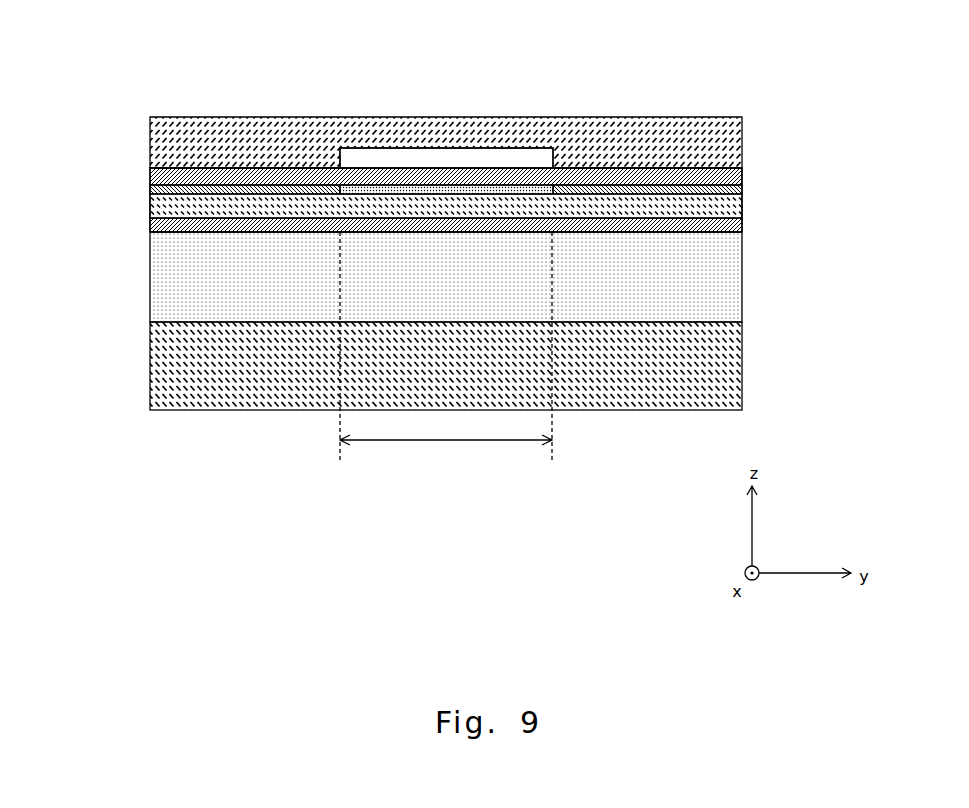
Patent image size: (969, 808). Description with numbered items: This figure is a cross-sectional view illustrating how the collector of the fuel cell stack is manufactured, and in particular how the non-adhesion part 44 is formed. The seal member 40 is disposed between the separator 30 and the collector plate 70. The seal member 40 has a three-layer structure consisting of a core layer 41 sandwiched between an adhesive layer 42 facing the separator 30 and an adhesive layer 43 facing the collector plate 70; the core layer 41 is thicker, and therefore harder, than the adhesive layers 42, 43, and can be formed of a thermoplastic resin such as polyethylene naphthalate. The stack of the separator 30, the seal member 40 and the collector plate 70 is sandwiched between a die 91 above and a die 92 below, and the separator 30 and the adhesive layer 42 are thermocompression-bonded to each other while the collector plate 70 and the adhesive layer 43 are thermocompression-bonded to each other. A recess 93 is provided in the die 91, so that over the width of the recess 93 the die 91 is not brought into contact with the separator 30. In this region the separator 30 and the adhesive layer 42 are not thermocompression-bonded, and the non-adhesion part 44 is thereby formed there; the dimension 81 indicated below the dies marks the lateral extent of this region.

The separator 30 is at (743, 178).
The seal member 40 is at (869, 153).
The core layer 41 is at (743, 207).
The adhesive layer 42 is at (743, 193).
The adhesive layer 43 is at (743, 225).
The non-adhesion part 44 is at (473, 193).
The collector plate 70 is at (743, 288).
The pressure chamber width 81 is at (445, 440).
The die 91 is at (150, 148).
The die 92 is at (150, 370).
The recess 93 is at (385, 158).